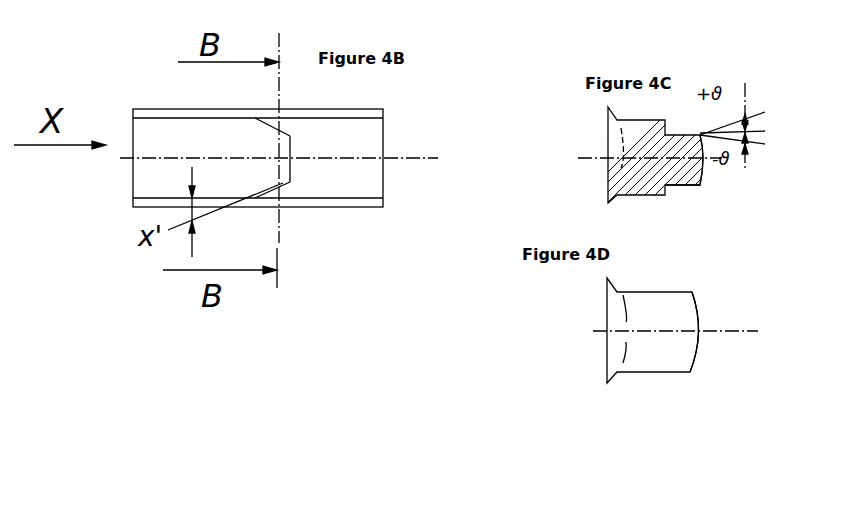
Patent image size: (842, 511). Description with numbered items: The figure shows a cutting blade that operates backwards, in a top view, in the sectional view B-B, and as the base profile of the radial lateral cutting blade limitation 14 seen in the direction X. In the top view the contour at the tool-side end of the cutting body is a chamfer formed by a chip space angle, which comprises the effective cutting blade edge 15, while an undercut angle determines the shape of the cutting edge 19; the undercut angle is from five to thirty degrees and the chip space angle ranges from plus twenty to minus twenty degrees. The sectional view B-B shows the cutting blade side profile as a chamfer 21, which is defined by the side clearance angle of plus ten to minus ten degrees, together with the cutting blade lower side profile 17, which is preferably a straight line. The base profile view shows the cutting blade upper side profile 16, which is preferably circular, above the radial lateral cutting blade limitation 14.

In FIG. 4D, the radial lateral cutting blade limitation 14 is at (608, 380).
In FIG. 4B, the effective cutting blade edge 15 is at (293, 147).
In FIG. 4D, the cutting blade upper side profile 16 is at (698, 305).
In FIG. 4C, the cutting blade lower side profile 17 is at (608, 185).
In FIG. 4B, the cutting edge 19 is at (300, 202).
In FIG. 4C, the chamfer 21 is at (682, 187).